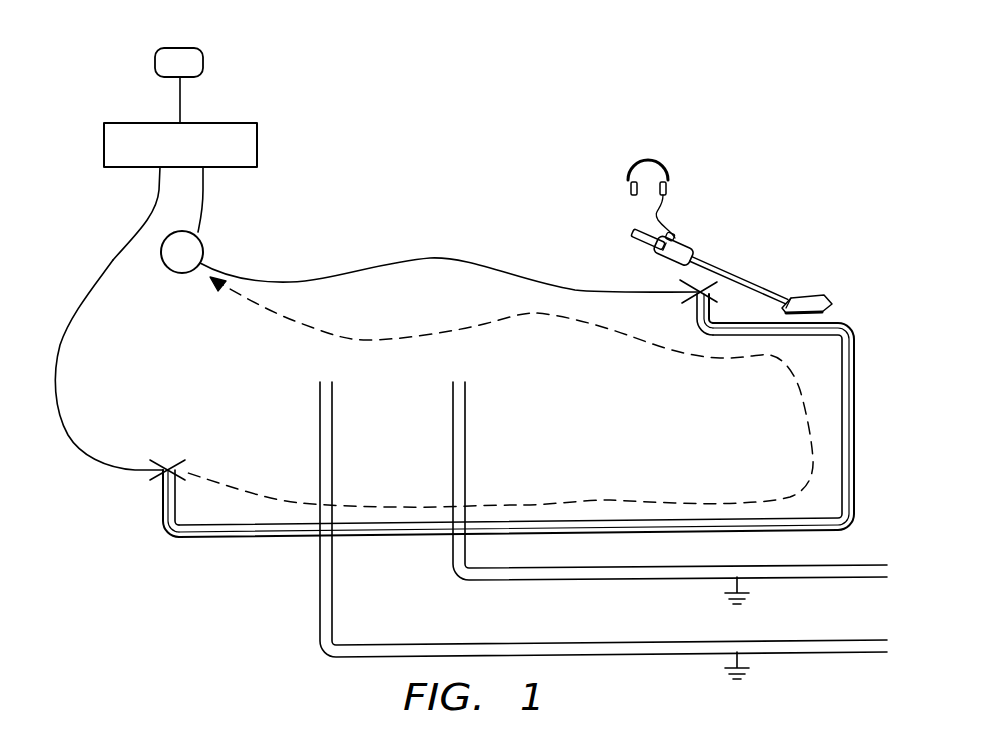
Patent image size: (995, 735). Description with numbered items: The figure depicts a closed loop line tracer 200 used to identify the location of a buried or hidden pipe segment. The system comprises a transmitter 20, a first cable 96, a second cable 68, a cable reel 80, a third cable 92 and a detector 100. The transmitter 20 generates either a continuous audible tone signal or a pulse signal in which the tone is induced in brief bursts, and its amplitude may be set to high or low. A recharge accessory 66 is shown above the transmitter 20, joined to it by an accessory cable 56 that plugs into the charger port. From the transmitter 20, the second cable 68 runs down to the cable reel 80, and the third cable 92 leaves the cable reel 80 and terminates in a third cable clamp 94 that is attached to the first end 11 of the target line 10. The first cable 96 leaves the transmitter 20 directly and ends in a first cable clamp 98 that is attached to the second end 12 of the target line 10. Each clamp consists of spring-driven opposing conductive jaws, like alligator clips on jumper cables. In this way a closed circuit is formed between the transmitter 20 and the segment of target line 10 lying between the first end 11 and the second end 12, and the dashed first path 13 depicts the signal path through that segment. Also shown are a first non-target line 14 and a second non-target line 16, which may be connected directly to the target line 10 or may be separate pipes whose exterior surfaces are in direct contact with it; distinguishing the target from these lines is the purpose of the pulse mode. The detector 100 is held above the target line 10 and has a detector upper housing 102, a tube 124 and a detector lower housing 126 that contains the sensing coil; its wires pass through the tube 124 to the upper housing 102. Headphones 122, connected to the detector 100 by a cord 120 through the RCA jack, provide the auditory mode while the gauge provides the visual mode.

The target line 10 is at (854, 425).
The first end 11 is at (695, 313).
The second end 12 is at (162, 498).
The first path 13 is at (633, 502).
The first non-target line 14 is at (815, 577).
The second non-target line 16 is at (815, 652).
The transmitter 20 is at (104, 147).
The accessory cable 56 is at (180, 105).
The recharge accessory 66 is at (178, 48).
The second cable 68 is at (203, 190).
The cable reel 80 is at (173, 275).
The third cable 92 is at (430, 258).
The third cable clamp 94 is at (680, 283).
The first cable 96 is at (82, 453).
The first cable clamp 98 is at (165, 460).
The detector 100 is at (752, 231).
The detector upper housing 102 is at (683, 242).
The headphone cord 120 is at (660, 208).
The headphones 122 is at (648, 156).
The tube 124 is at (767, 290).
The detector lower housing 126 is at (820, 298).
The line tracer 200 is at (450, 90).